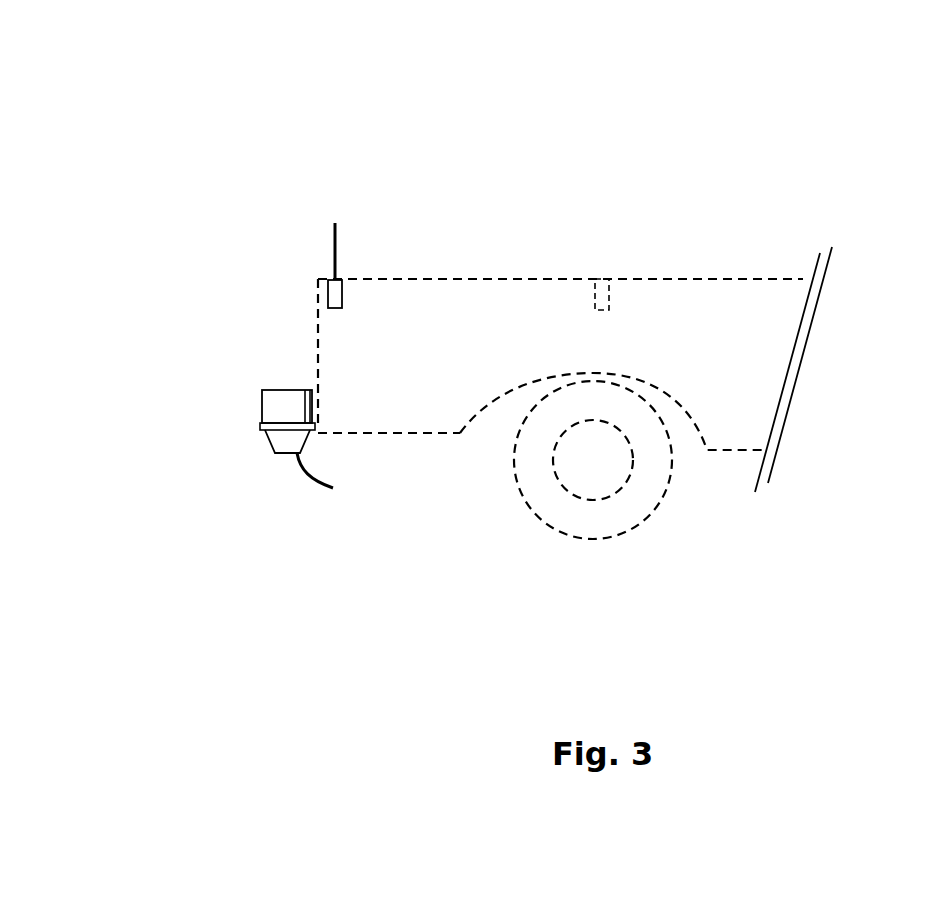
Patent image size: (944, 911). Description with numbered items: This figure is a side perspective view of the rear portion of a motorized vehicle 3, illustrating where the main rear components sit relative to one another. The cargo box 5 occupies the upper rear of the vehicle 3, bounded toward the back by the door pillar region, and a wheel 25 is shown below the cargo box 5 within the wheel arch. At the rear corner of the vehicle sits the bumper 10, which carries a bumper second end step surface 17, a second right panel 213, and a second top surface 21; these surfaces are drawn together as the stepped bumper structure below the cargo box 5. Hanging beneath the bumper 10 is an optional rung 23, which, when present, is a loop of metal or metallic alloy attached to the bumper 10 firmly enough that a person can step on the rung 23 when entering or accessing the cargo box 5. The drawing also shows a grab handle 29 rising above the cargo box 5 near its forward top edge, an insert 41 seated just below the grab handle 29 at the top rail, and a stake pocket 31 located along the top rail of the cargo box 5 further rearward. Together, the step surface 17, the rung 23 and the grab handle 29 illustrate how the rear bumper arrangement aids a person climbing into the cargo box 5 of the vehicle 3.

The motorized vehicle 3 is at (575, 108).
The cargo box 5 is at (743, 315).
The bumper 10 is at (237, 433).
The bumper second end step surface 17 is at (260, 425).
The second top surface 21 is at (288, 388).
The second right panel 213 is at (283, 403).
The rung 23 is at (337, 477).
The wheel 25 is at (637, 500).
The grab handle 29 is at (336, 247).
The stake pocket 31 is at (603, 287).
The insert 41 is at (335, 291).